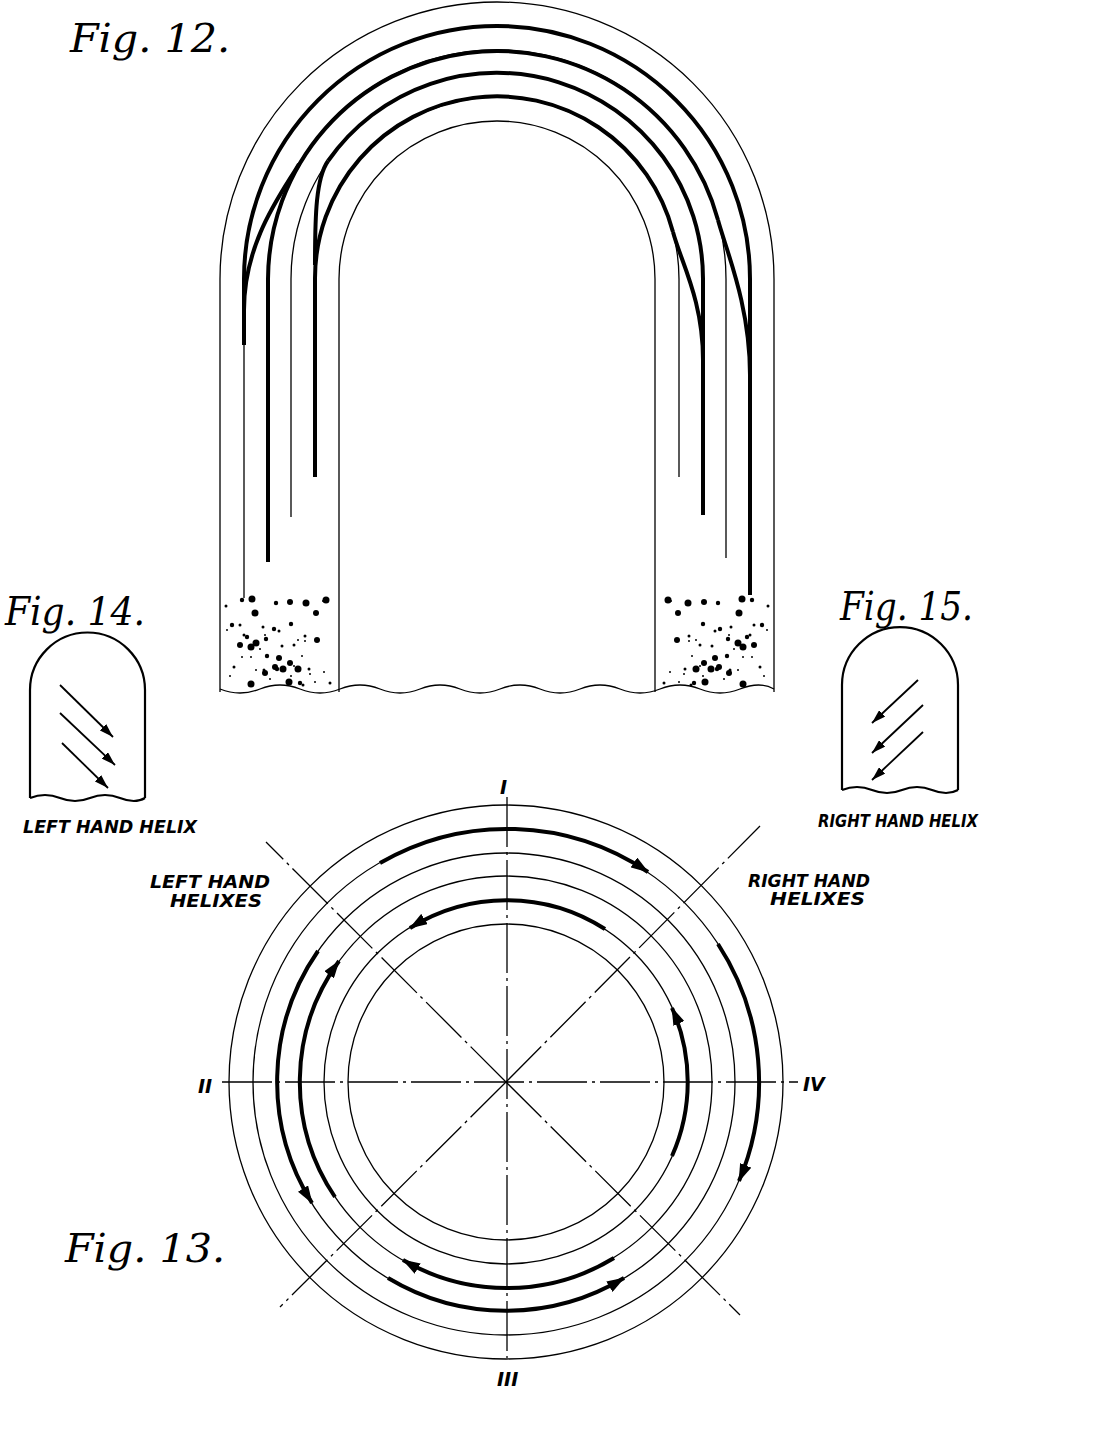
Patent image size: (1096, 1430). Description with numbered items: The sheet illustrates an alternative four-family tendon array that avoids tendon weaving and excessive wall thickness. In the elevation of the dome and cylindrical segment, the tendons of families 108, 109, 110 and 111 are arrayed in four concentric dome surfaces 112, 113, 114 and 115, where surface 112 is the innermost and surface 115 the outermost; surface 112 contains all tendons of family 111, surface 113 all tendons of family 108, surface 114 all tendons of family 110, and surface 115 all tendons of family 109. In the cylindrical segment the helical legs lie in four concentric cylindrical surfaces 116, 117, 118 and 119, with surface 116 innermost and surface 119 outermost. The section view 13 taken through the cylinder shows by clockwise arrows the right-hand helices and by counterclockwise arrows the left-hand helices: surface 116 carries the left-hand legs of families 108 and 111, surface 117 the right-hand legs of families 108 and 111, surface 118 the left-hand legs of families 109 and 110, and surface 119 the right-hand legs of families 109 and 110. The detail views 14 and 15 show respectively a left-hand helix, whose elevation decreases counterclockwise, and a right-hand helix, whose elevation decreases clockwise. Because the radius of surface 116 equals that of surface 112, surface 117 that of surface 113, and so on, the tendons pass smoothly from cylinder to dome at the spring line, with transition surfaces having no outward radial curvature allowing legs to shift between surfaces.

In FIG. 12, the tendon family 108 is at (352, 137).
In FIG. 13, the tendon family 108 is at (560, 900).
In FIG. 12, the tendon family 109 is at (264, 213).
In FIG. 13, the tendon family 109 is at (432, 836).
In FIG. 12, the tendon family 110 is at (291, 172).
In FIG. 13, the tendon family 110 is at (275, 1047).
In FIG. 12, the tendon family 111 is at (330, 208).
In FIG. 13, the tendon family 111 is at (299, 1114).
In FIG. 12, the concentric dome surface 112 is at (622, 148).
In FIG. 12, the concentric dome surface 113 is at (660, 157).
In FIG. 12, the concentric dome surface 114 is at (702, 180).
In FIG. 12, the concentric dome surface 115 is at (737, 212).
In FIG. 12, the concentric cylindrical surface 116 is at (679, 466).
In FIG. 13, the concentric cylindrical surface 116 is at (339, 1015).
In FIG. 12, the concentric cylindrical surface 117 is at (703, 507).
In FIG. 13, the concentric cylindrical surface 117 is at (319, 1157).
In FIG. 12, the concentric cylindrical surface 118 is at (726, 549).
In FIG. 13, the concentric cylindrical surface 118 is at (703, 967).
In FIG. 12, the concentric cylindrical surface 119 is at (750, 588).
In FIG. 13, the concentric cylindrical surface 119 is at (722, 1207).
In FIG. 12, the section view of the cylindrical segment 13 is at (110, 411).
In FIG. 12, the left-hand helix view 14 is at (185, 232).
In FIG. 12, the right-hand helix view 15 is at (847, 240).